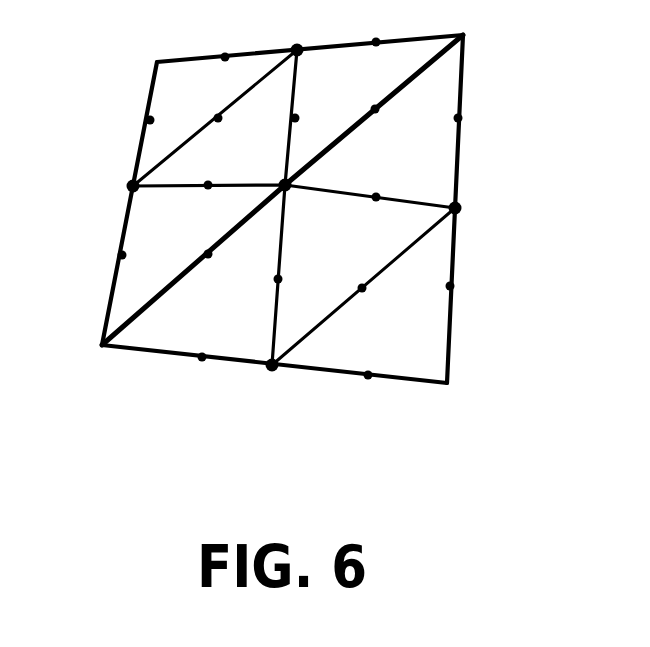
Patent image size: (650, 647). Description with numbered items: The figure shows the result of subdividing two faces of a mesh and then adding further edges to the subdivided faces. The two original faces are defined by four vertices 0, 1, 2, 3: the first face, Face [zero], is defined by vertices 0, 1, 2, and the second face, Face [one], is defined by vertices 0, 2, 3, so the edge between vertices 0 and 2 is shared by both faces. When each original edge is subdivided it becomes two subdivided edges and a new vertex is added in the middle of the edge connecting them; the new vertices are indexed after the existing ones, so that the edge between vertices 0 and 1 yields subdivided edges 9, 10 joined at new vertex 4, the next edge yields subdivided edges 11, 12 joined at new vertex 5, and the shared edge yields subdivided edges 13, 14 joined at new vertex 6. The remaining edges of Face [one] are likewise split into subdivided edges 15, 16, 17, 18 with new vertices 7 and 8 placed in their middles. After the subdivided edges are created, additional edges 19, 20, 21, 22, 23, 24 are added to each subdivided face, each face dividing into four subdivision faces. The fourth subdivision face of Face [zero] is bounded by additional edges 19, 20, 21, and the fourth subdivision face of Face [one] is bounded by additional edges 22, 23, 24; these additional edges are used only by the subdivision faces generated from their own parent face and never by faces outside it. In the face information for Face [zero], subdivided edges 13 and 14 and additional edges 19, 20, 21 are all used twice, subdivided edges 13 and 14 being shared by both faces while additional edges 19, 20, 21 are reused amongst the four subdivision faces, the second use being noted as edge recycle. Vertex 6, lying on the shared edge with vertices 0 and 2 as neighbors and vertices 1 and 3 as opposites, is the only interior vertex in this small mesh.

The vertex 0 is at (89, 353).
The vertex 1 is at (141, 47).
The vertex 2 is at (469, 20).
The vertex 3 is at (460, 388).
The vertex 4 is at (121, 184).
The vertex 5 is at (297, 32).
The vertex 6 is at (293, 201).
The vertex 7 is at (468, 206).
The vertex 8 is at (270, 384).
The subdivided edge 9 is at (109, 253).
The subdivided edge 10 is at (130, 116).
The subdivided edge 11 is at (214, 42).
The subdivided edge 12 is at (371, 25).
The subdivided edge 13 is at (357, 93).
The subdivided edge 14 is at (191, 241).
The subdivided edge 15 is at (437, 119).
The subdivided edge 16 is at (430, 278).
The subdivided edge 17 is at (369, 354).
The subdivided edge 18 is at (201, 339).
The additional edge 19 is at (203, 103).
The additional edge 20 is at (273, 119).
The additional edge 21 is at (216, 170).
The additional edge 22 is at (372, 215).
The additional edge 23 is at (345, 276).
The additional edge 24 is at (256, 279).